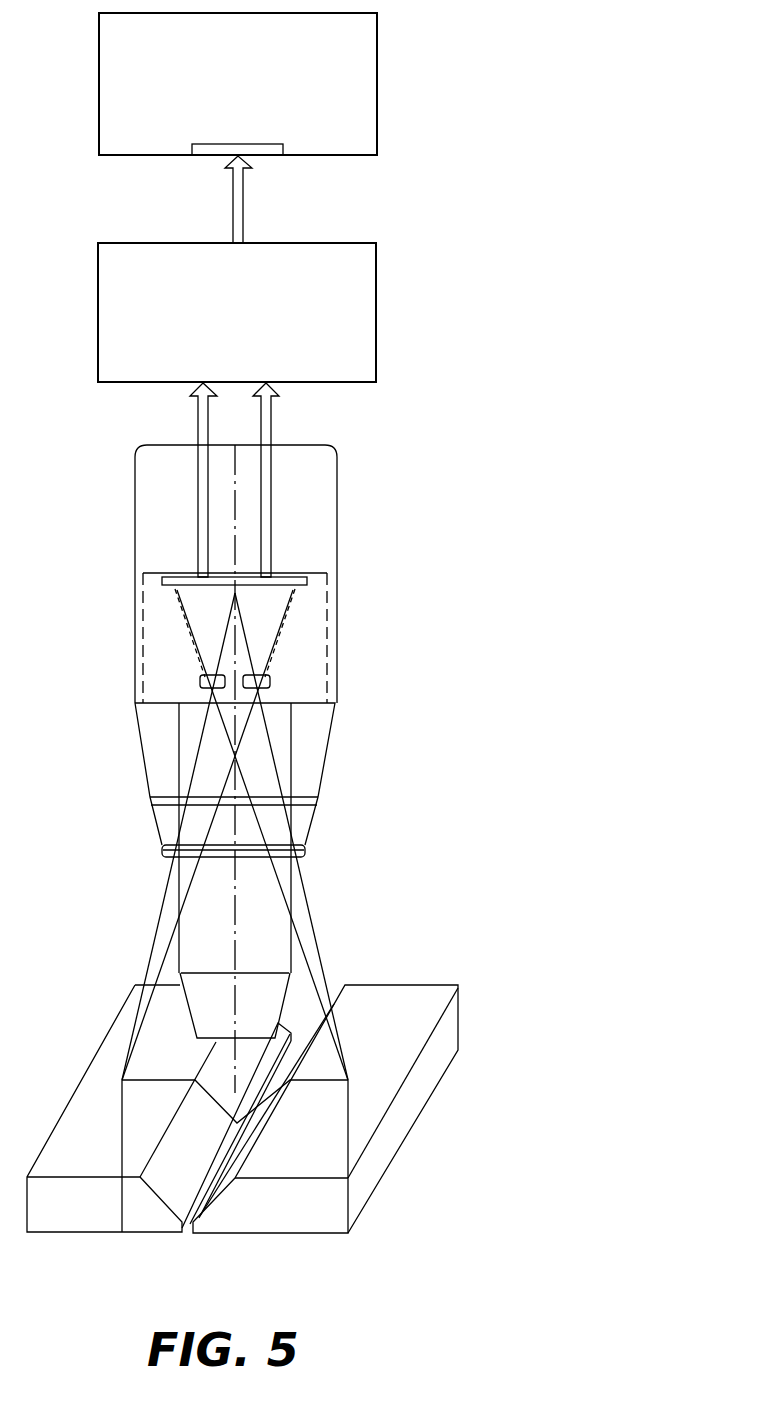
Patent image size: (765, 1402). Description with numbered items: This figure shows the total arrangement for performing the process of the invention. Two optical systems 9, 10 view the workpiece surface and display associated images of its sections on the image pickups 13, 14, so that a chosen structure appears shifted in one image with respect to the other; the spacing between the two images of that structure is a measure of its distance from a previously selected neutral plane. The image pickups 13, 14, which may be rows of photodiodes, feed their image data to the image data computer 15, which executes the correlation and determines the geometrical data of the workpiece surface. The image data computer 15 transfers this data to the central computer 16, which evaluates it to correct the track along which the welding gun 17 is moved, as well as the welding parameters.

The optical system 9 is at (200, 679).
The optical system 10 is at (270, 682).
The image pickup 13 is at (173, 590).
The image pickup 14 is at (297, 590).
The image data computer 15 is at (363, 302).
The central computer 16 is at (363, 95).
The welding gun 17 is at (255, 922).